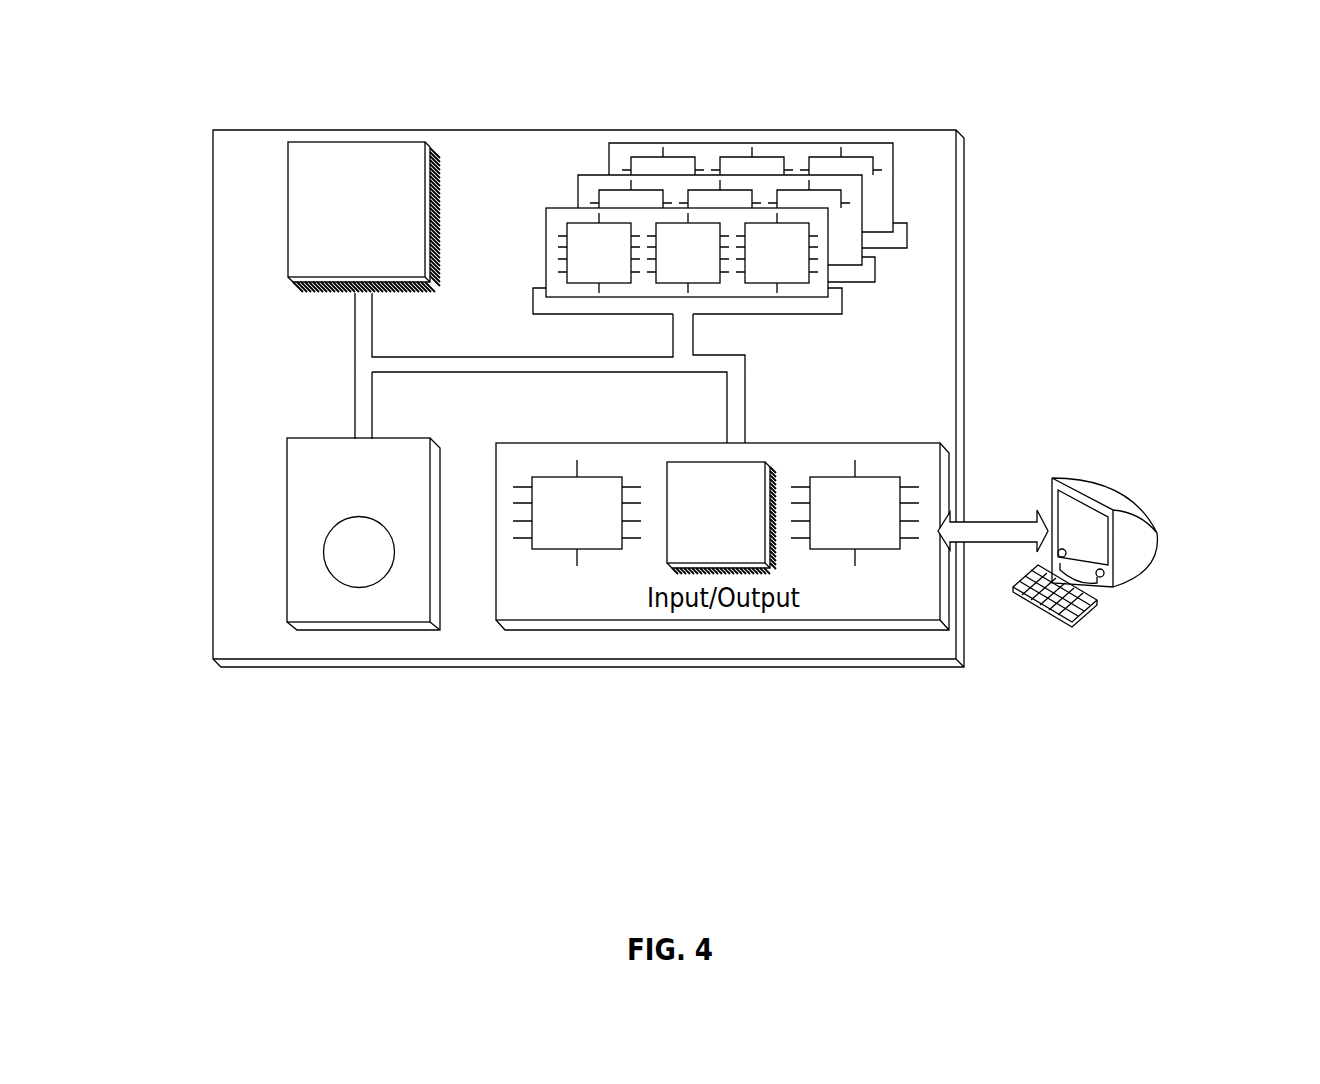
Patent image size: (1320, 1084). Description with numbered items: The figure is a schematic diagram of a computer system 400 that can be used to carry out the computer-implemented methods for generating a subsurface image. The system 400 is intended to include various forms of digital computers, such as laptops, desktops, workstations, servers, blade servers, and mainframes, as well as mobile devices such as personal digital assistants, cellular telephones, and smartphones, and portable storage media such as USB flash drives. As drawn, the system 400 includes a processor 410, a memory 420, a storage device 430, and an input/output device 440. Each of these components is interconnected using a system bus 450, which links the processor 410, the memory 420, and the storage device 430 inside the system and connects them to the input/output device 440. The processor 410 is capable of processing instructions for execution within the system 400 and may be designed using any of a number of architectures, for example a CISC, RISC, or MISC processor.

The computer system 400 is at (265, 79).
The processor 410 is at (407, 266).
The memory 420 is at (882, 291).
The storage device 430 is at (418, 613).
The input/output device 440 is at (1150, 515).
The system bus 450 is at (490, 363).